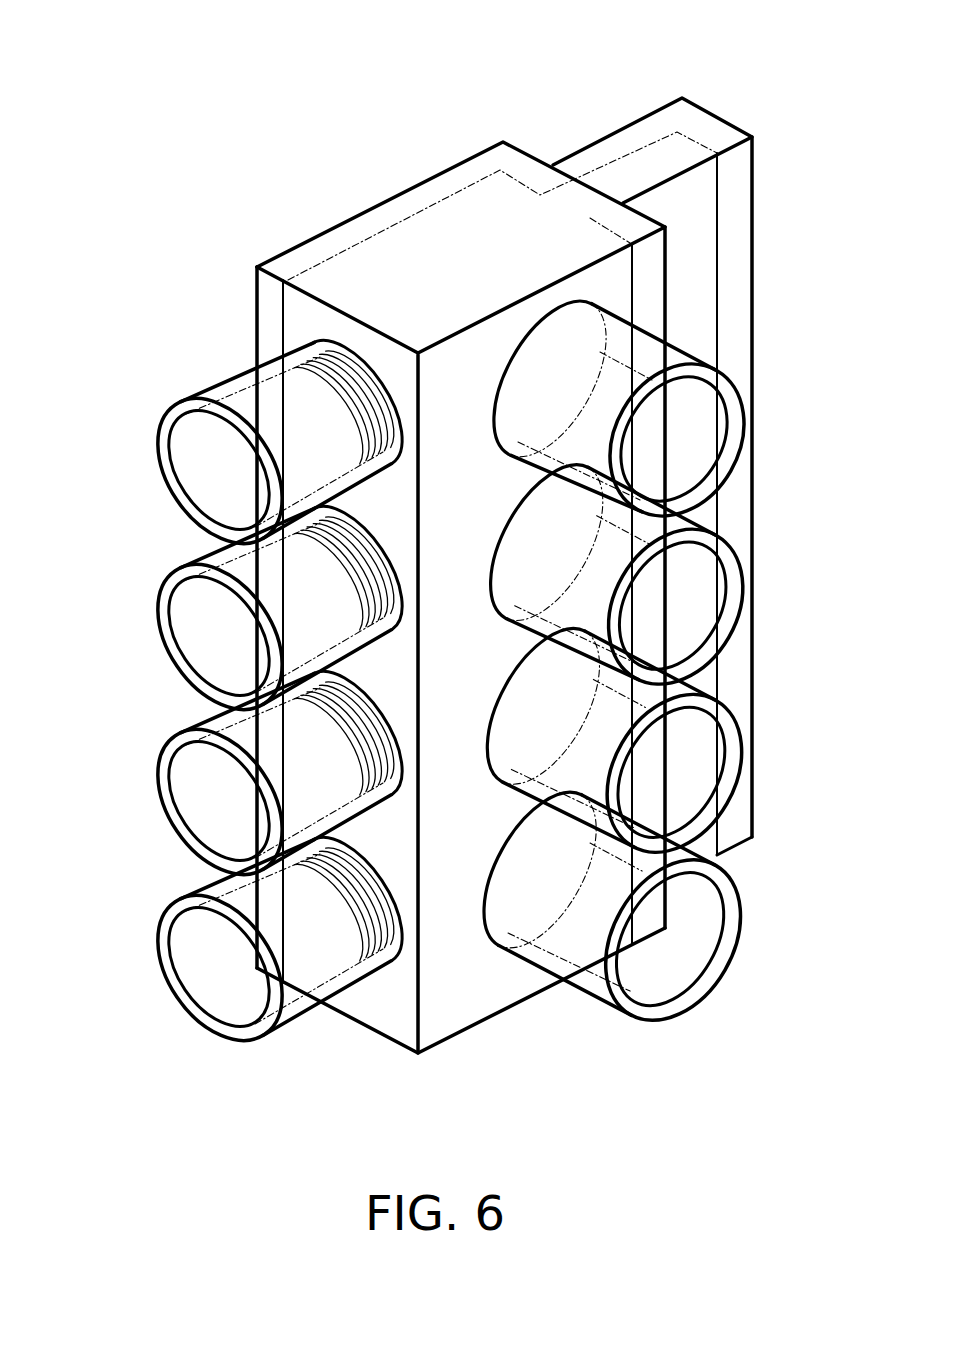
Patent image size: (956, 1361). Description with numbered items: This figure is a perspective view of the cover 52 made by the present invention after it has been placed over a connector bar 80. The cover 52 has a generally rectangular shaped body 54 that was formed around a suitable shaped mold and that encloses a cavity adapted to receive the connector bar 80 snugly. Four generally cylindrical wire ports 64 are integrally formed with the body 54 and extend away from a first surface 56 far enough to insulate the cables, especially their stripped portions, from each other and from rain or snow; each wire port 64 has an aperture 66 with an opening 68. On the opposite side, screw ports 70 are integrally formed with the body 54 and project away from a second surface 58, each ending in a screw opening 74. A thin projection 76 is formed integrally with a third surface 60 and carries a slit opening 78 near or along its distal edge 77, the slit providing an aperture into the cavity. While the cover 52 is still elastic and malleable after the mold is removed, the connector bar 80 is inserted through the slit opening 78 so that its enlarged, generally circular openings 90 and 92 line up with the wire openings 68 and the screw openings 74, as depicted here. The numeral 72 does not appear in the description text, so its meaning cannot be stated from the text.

The cover 52 is at (505, 1050).
The body 54 is at (365, 1015).
The first surface 56 is at (268, 311).
The second surface 58 is at (470, 360).
The third surface 60 is at (488, 153).
The wire port 64 is at (160, 580).
The aperture 66 is at (168, 801).
The opening 68 is at (165, 433).
The screw port 70 is at (668, 420).
The outlet fitting 72 is at (645, 586).
The screw opening 74 is at (748, 410).
The thin projection 76 is at (650, 113).
The distal edge 77 is at (755, 692).
The slit opening 78 is at (718, 190).
The connector bar 80 is at (355, 243).
The opening 90 is at (382, 876).
The opening 92 is at (492, 540).